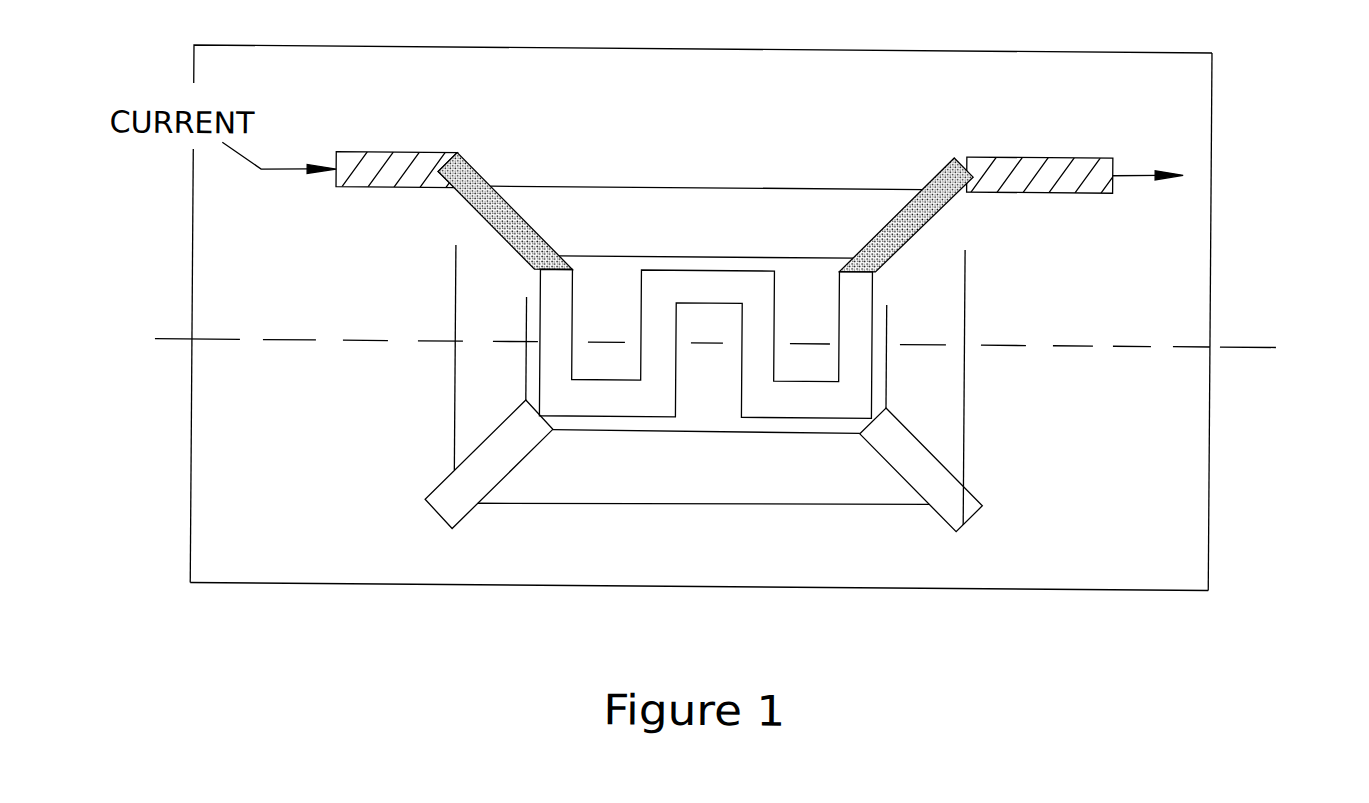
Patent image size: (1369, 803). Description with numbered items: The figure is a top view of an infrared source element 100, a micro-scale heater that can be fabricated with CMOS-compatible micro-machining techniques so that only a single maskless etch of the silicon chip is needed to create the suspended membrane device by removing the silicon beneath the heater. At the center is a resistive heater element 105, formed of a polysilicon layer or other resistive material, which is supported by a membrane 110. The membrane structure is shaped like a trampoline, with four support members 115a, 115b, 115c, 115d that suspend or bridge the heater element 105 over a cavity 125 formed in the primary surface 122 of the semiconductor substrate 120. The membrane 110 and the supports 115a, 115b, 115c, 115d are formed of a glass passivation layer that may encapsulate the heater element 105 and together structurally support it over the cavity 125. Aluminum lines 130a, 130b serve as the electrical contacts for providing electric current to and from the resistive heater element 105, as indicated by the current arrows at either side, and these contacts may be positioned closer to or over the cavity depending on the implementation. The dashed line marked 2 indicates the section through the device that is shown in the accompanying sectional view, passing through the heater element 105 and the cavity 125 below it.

The infrared source element 100 is at (779, 318).
The resistive heater element 105 is at (702, 266).
The membrane 110 is at (600, 270).
The support member 115a is at (540, 227).
The support member 115b is at (897, 214).
The support member 115c is at (553, 427).
The support member 115d is at (843, 428).
The semiconductor substrate 120 is at (1212, 409).
The primary surface 122 is at (1164, 501).
The cavity 125 is at (712, 473).
The aluminum line 130a is at (423, 150).
The aluminum line 130b is at (1040, 186).
The section line 2- 2 is at (112, 397).